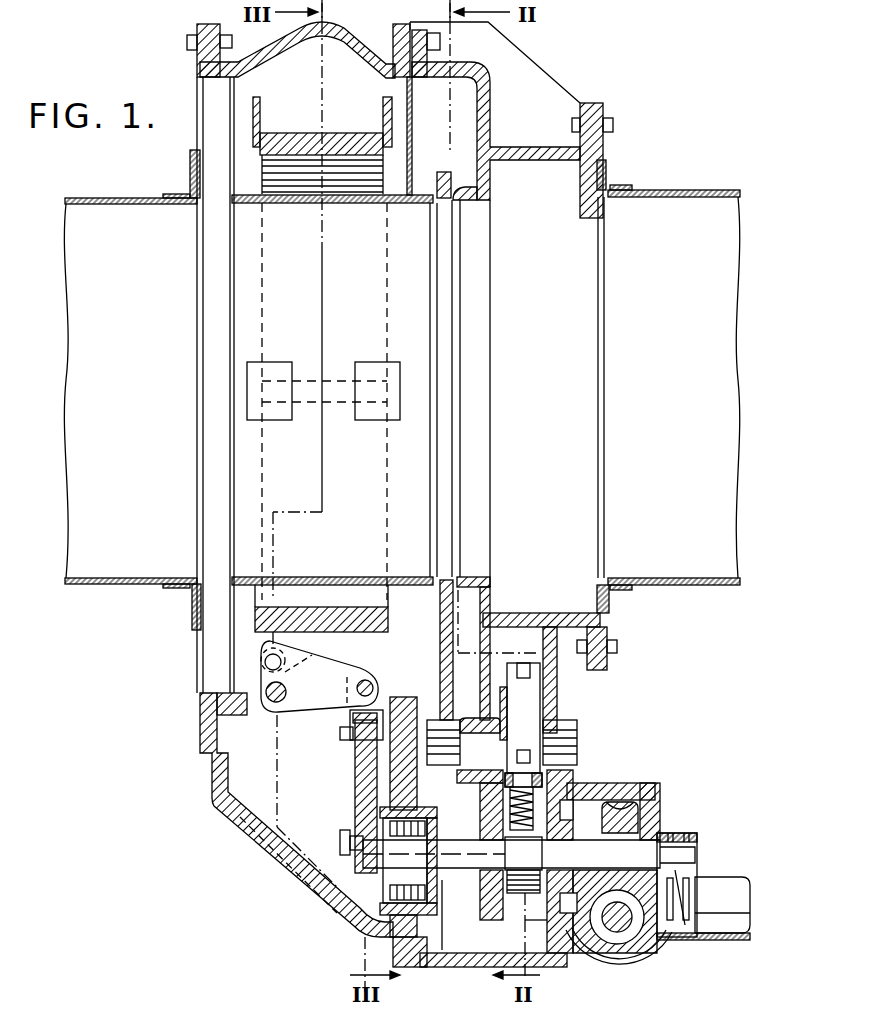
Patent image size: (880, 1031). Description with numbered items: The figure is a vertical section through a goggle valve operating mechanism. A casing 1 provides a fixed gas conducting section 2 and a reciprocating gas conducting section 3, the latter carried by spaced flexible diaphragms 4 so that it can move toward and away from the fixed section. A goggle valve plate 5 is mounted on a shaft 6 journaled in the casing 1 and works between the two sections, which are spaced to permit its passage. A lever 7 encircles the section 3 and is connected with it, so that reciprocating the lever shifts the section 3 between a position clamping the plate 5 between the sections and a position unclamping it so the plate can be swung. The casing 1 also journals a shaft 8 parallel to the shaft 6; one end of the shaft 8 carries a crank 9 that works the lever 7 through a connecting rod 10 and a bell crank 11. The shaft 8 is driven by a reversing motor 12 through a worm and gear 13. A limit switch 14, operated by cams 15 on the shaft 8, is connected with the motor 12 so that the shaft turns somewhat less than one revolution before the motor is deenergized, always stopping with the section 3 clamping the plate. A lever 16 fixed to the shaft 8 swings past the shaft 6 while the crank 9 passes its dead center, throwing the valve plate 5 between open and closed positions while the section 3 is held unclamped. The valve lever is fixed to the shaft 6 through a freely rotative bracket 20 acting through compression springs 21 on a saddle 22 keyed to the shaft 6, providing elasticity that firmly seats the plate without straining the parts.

The casing 1 is at (522, 147).
The fixed gas conducting section 2 is at (470, 197).
The reciprocating gas conducting section 3 is at (291, 205).
The diaphragms 4 is at (230, 160).
The goggle valve plate 5 is at (450, 570).
The shaft 6 is at (560, 747).
The lever 7 is at (337, 134).
The shaft 8 is at (473, 862).
The crank 9 is at (390, 862).
The connecting rod 10 is at (363, 792).
The bell crank 11 is at (312, 698).
The reversing motor 12 is at (647, 960).
The worm and gear 13 is at (623, 820).
The limit switch 14 is at (735, 898).
The cams 15 is at (683, 897).
The lever 16 is at (527, 885).
The freely rotative bracket 20 is at (520, 698).
The compression springs 21 is at (540, 797).
The saddle 22 is at (510, 820).